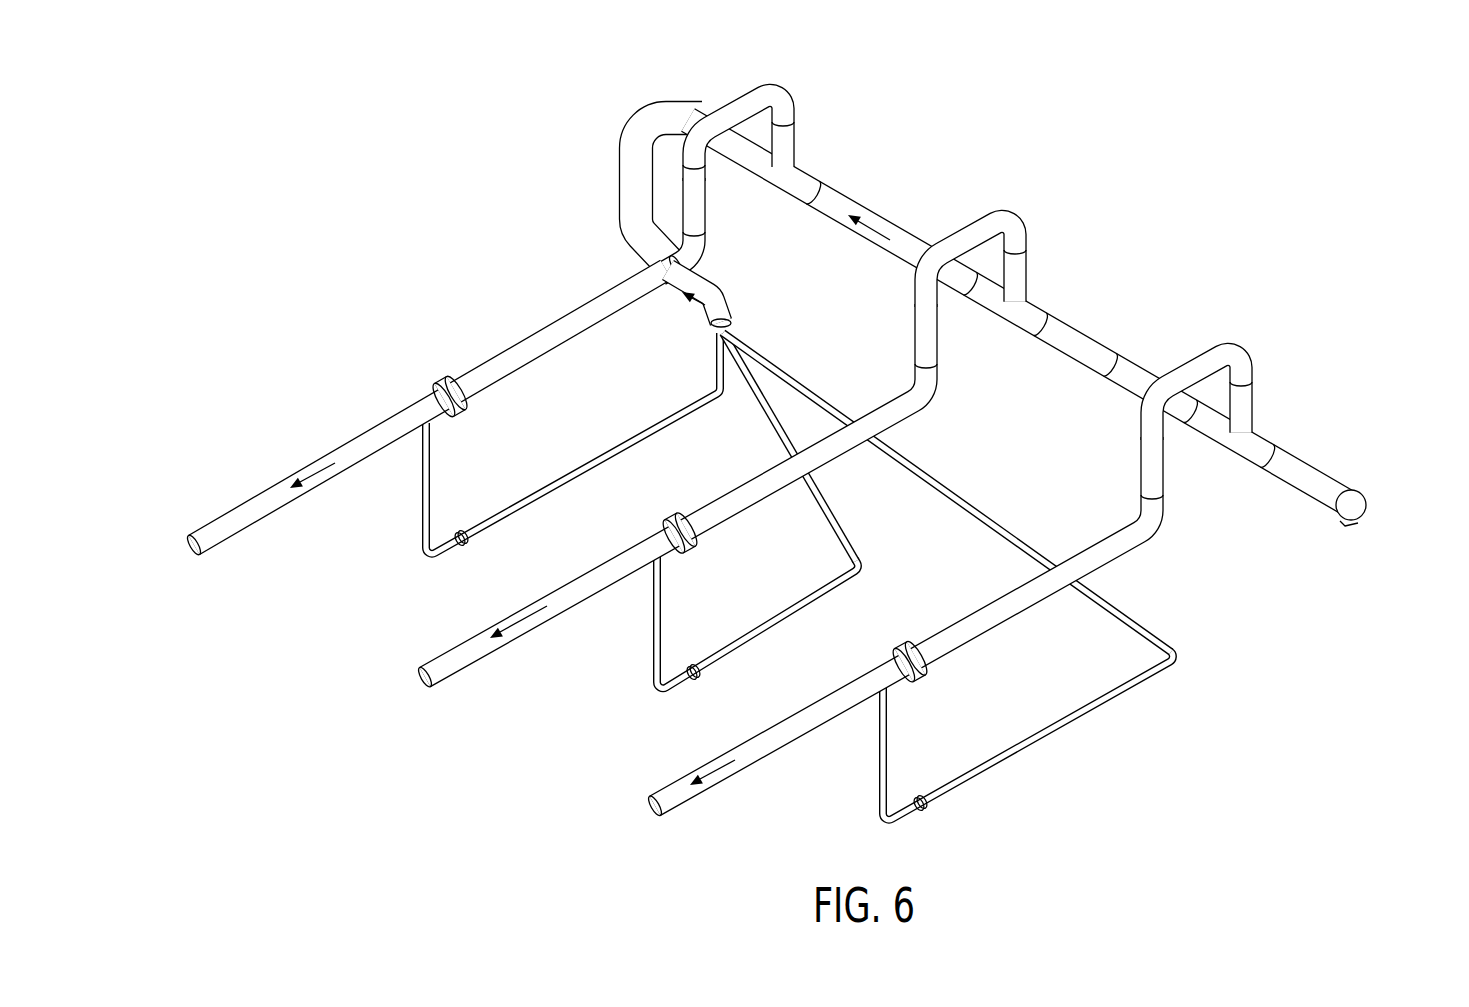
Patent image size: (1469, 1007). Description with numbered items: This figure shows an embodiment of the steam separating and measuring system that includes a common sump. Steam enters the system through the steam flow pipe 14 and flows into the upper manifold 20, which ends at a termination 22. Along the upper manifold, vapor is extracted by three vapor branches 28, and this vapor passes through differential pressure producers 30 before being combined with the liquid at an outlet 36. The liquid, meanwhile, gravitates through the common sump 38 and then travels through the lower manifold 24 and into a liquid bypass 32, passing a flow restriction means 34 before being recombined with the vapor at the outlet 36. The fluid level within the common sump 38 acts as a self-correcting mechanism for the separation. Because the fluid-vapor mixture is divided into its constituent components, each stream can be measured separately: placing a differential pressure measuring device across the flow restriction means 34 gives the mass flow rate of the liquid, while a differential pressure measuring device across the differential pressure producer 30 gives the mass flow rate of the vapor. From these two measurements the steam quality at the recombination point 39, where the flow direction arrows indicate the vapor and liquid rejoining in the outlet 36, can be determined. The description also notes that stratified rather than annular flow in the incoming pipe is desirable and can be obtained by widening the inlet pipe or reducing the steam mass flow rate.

The steam flow pipe 14 is at (1362, 493).
The header pipe 20 is at (868, 203).
The termination 22 is at (697, 112).
The lower manifold 24 is at (713, 377).
The vapor branches 28 is at (738, 102).
The differential pressure producers 30 is at (457, 419).
The liquid bypass 32 is at (562, 490).
The flow restriction means 34 is at (463, 547).
The outlet 36 is at (267, 520).
The common sump 38 is at (620, 183).
The recombination point 39 is at (405, 468).